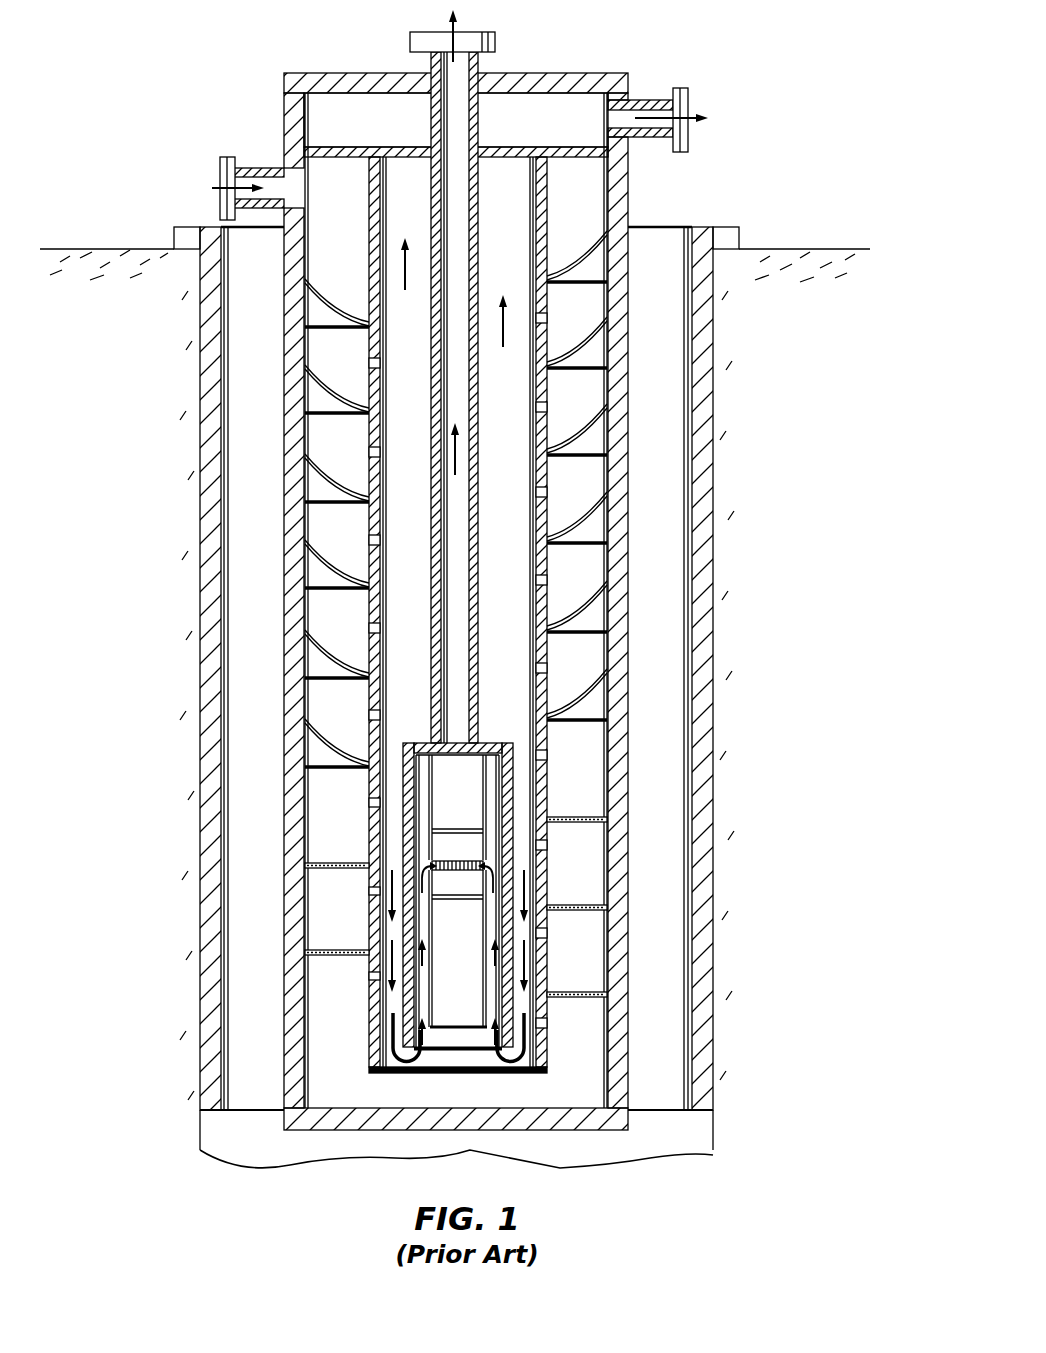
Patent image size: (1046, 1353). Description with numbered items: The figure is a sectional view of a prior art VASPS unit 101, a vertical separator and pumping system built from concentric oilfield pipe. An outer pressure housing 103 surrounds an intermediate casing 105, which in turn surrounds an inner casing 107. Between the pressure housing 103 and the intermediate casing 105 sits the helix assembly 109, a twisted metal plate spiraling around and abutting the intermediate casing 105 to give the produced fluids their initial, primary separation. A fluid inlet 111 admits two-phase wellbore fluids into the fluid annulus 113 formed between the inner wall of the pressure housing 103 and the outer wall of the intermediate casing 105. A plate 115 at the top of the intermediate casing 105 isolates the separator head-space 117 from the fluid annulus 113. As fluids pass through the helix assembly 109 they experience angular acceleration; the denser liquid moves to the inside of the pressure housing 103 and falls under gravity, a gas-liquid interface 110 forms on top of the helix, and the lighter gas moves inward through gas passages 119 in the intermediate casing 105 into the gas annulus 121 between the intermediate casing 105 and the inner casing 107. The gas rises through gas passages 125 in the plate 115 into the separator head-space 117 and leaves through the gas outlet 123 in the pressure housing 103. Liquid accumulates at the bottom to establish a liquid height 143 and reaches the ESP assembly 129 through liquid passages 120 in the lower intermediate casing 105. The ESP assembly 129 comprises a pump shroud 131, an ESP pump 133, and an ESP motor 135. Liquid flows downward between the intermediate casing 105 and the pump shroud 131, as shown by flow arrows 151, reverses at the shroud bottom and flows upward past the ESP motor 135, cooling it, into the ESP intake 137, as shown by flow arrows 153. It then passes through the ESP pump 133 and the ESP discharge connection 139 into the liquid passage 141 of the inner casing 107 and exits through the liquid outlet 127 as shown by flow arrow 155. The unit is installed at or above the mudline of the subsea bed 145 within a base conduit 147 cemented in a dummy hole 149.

The prior art VASPS unit 101 is at (280, 60).
The pressure housing 103 is at (292, 428).
The intermediate casing 105 is at (606, 320).
The inner casing 107 is at (548, 420).
The helix assembly 109 is at (358, 405).
The gas-liquid interface 110 is at (350, 500).
The fluid inlet 111 is at (220, 170).
The fluid annulus 113 is at (338, 182).
The plate 115 is at (585, 143).
The separator head-space 117 is at (385, 107).
The gas passages 119 is at (367, 362).
The liquid passages 120 is at (350, 866).
The gas annulus 121 is at (322, 452).
The gas outlet 123 is at (680, 88).
The gas passages 125 is at (503, 147).
The liquid outlet 127 is at (482, 36).
The ESP assembly 129 is at (496, 815).
The pump shroud 131 is at (508, 812).
The ESP pump 133 is at (485, 842).
The ESP motor 135 is at (478, 927).
The ESP intake 137 is at (443, 858).
The ESP discharge connection 139 is at (460, 738).
The liquid passage 141 is at (458, 530).
The liquid height 143 is at (515, 770).
The subsea bed 145 is at (130, 247).
The base conduit 147 is at (207, 302).
The dummy hole 149 is at (240, 1128).
The flow arrows 151 is at (393, 1040).
The flow arrows 153 is at (528, 1000).
The flow arrow 155 is at (478, 427).